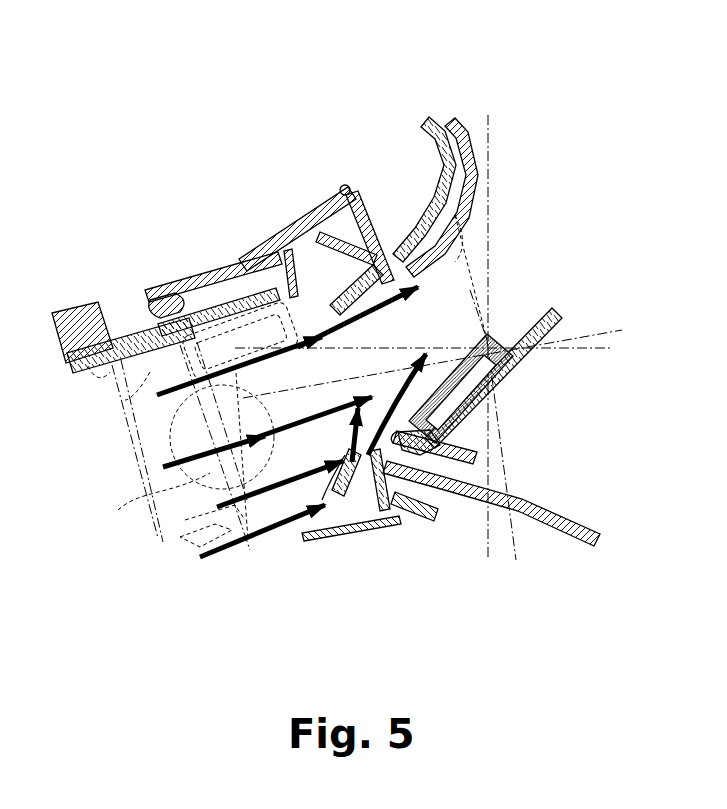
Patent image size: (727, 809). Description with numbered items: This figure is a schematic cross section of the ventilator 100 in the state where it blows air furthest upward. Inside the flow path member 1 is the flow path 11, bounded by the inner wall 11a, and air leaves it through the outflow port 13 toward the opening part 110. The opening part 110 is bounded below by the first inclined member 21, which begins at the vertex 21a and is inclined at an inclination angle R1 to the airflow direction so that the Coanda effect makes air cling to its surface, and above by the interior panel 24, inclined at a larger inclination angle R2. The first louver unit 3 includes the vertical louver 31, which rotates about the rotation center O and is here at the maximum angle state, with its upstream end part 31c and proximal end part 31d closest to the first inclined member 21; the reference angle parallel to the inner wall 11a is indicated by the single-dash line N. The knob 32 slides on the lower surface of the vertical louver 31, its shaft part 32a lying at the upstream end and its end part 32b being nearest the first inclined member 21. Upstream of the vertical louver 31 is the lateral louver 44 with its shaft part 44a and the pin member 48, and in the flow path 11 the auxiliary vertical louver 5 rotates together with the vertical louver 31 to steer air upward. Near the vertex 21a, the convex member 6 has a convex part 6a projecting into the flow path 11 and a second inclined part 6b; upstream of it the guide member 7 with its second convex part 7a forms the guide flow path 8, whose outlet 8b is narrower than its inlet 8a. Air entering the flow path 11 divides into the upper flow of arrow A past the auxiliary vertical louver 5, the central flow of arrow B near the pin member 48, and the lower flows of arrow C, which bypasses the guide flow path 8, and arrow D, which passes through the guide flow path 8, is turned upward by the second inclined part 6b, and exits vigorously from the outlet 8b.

The ventilator 100 is at (100, 95).
The flow path member 1 is at (214, 271).
The flow path 11 is at (138, 372).
The inner wall 11a is at (85, 365).
The shaft part 44a is at (187, 300).
The auxiliary vertical louver 5 is at (305, 292).
The outflow port 13 is at (395, 232).
The interior panel 24 is at (438, 232).
The opening part 110 is at (513, 227).
The inclination angle R2 is at (486, 229).
The first louver unit 3 is at (540, 297).
The knob 32 is at (540, 322).
The single-dash line N is at (597, 307).
The rotation center O is at (492, 338).
The vertical louver 31 is at (440, 378).
The upstream end part 31c is at (497, 400).
The proximal end part 31d is at (490, 417).
The shaft part 32a is at (440, 438).
The end part 32b is at (455, 450).
The convex part 6a is at (450, 468).
The inclination angle R1 is at (425, 505).
The vertex 21a is at (407, 480).
The first inclined member 21 is at (548, 520).
The convex member 6 is at (422, 540).
The second inclined part 6b is at (367, 490).
The guide member 7 is at (330, 500).
The second convex part 7a is at (367, 540).
The guide flow path 8 is at (396, 531).
The inlet 8a is at (345, 520).
The outlet 8b is at (393, 487).
The arrow A is at (157, 394).
The pin member 48 is at (290, 407).
The arrow B is at (160, 487).
The arrow C is at (230, 517).
The lateral louver 44 is at (203, 533).
The arrow D is at (255, 540).